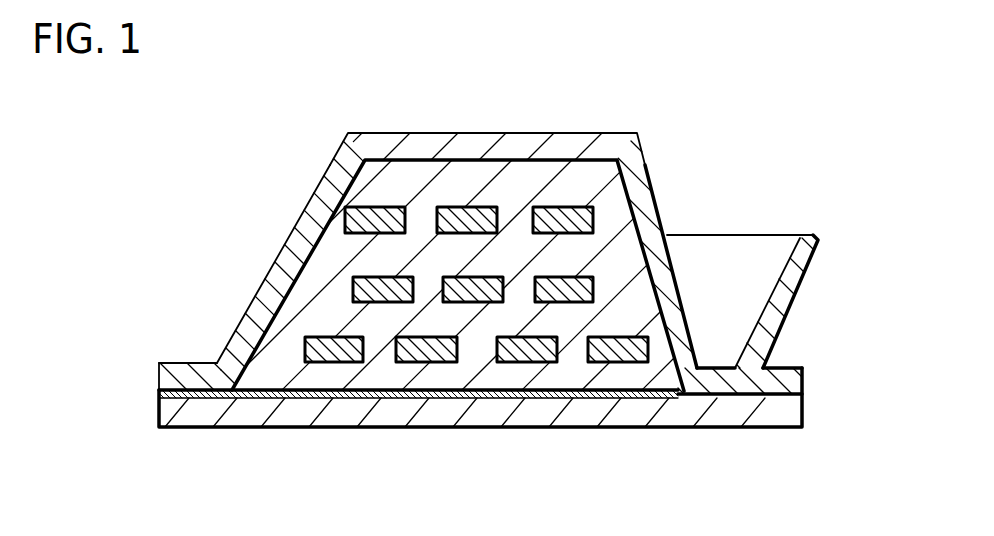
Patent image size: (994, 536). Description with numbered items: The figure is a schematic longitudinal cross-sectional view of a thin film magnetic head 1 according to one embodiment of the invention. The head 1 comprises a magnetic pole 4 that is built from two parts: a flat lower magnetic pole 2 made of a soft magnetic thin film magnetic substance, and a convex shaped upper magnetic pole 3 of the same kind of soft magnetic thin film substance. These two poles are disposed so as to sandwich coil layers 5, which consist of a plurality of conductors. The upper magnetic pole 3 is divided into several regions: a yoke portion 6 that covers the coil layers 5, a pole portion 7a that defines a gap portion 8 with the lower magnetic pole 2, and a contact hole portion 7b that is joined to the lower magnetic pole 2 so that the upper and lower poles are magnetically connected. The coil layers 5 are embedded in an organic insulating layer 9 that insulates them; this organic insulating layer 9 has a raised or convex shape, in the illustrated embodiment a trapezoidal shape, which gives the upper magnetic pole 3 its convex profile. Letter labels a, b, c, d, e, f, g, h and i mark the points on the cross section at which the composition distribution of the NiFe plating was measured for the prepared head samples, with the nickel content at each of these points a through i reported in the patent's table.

The thin film magnetic head 1 is at (643, 121).
The lower magnetic pole 2 is at (252, 430).
The upper magnetic pole 3 is at (313, 208).
The magnetic pole 4 is at (650, 177).
The coil layers 5 is at (446, 362).
The yoke portion 6 is at (387, 131).
The pole portion 7a is at (158, 377).
The contact hole portion 7b is at (716, 376).
The gap portion 8 is at (158, 397).
The organic insulating layer 9 is at (516, 172).
The measurement point a is at (187, 377).
The measurement point b is at (237, 338).
The measurement point c is at (345, 157).
The measurement point d is at (447, 147).
The measurement point e is at (610, 143).
The measurement point f is at (673, 257).
The measurement point g is at (718, 380).
The measurement point h is at (522, 412).
The measurement point i is at (315, 412).